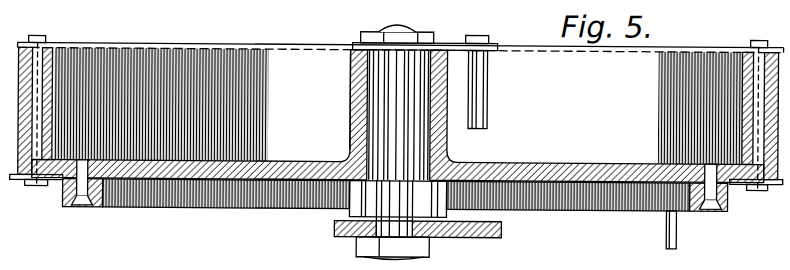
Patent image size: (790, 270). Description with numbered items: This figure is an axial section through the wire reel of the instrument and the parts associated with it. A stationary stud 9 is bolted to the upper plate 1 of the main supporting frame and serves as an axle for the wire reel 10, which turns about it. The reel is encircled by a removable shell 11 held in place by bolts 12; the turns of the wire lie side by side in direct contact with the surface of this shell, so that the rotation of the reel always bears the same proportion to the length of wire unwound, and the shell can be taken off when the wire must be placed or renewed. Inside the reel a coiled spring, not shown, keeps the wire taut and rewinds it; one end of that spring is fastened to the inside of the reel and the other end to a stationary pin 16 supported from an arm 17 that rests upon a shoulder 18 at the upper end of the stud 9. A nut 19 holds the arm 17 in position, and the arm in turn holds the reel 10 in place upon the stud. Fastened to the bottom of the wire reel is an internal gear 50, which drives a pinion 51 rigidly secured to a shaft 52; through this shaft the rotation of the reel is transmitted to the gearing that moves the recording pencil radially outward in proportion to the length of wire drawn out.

The plate 1 is at (491, 233).
The stud 9 is at (383, 97).
The wire reel 10 is at (351, 77).
The removable shell 11 is at (19, 163).
The bolts 12 is at (40, 59).
The stationary pin 16 is at (480, 111).
The arm 17 is at (458, 43).
The shoulder 18 is at (353, 54).
The nut 19 is at (365, 32).
The internal gear 50 is at (585, 200).
The pinion 51 is at (663, 205).
The shaft 52 is at (678, 241).